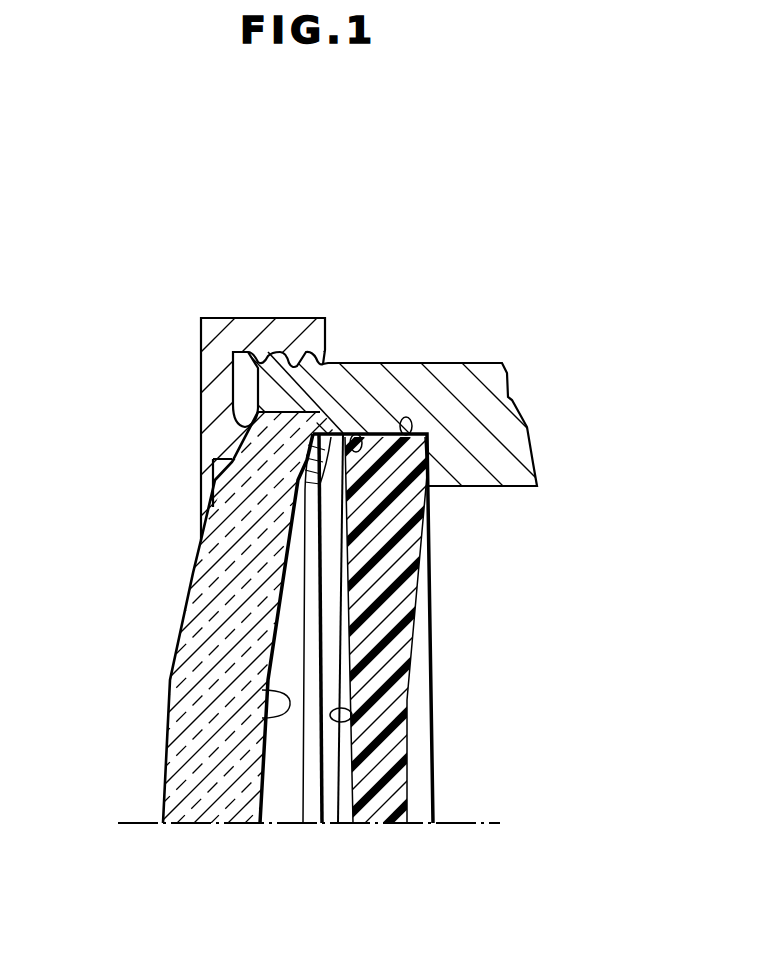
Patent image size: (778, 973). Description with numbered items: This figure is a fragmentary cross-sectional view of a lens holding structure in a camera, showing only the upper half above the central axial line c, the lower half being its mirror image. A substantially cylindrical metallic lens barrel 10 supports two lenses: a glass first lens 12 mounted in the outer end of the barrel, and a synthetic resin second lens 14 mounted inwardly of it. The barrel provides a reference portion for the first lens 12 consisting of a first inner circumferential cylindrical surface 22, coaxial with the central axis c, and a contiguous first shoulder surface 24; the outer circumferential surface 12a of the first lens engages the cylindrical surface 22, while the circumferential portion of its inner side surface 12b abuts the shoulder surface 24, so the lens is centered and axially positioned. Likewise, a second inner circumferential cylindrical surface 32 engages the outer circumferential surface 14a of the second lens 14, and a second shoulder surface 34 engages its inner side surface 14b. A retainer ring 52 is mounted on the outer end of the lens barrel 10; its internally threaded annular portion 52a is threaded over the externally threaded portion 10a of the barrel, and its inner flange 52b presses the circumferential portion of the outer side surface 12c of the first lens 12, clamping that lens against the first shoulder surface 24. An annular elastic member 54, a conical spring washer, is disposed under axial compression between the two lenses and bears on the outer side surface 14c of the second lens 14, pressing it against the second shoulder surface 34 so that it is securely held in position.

The lens barrel 10 is at (477, 350).
The externally threaded portion 10a is at (268, 345).
The first lens 12 is at (183, 583).
The outer circumferential surface of the first lens 12a is at (213, 482).
The inner side surface of the first lens 12b is at (262, 712).
The outer side surface of the first lens 12c is at (170, 680).
The second lens 14 is at (460, 603).
The outer circumferential surface of the second lens 14a is at (430, 490).
The inner side surface of the second lens 14b is at (407, 682).
The outer side surface of the second lens 14c is at (350, 714).
The first inner circumferential cylindrical surface 22 is at (240, 412).
The first shoulder surface 24 is at (303, 357).
The second inner circumferential cylindrical surface 32 is at (367, 437).
The second shoulder surface 34 is at (410, 437).
The retainer ring 52 is at (165, 333).
The internally threaded annular portion 52a is at (332, 387).
The inner flange 52b is at (200, 398).
The annular elastic member 54 is at (312, 542).
The central axial line c is at (483, 823).